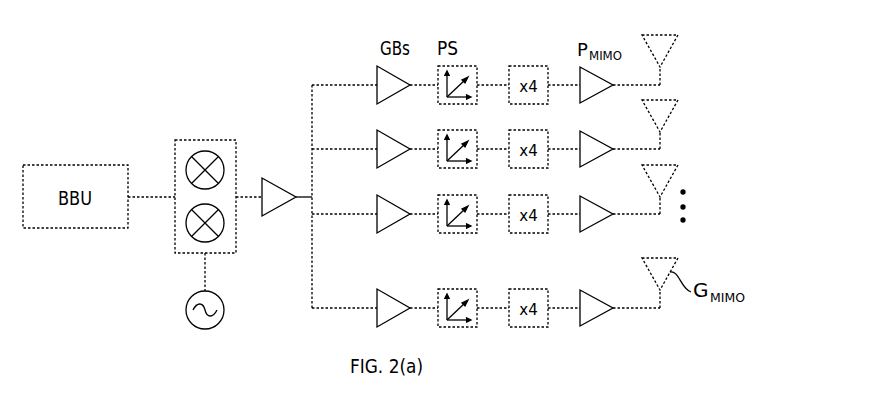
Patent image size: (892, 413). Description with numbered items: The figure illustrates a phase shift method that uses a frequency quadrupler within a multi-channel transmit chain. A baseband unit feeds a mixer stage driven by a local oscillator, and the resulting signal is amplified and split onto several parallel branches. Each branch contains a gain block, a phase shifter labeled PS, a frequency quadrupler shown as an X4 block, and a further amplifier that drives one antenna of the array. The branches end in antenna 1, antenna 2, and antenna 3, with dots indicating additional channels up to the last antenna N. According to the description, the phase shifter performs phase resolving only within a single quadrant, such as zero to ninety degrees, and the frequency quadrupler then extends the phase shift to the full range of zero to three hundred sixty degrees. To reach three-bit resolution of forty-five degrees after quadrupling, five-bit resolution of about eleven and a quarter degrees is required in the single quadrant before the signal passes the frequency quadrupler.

The antenna # 1 is at (664, 48).
The antenna # 2 is at (664, 113).
The antenna # 3 is at (664, 177).
The antenna # N is at (667, 271).